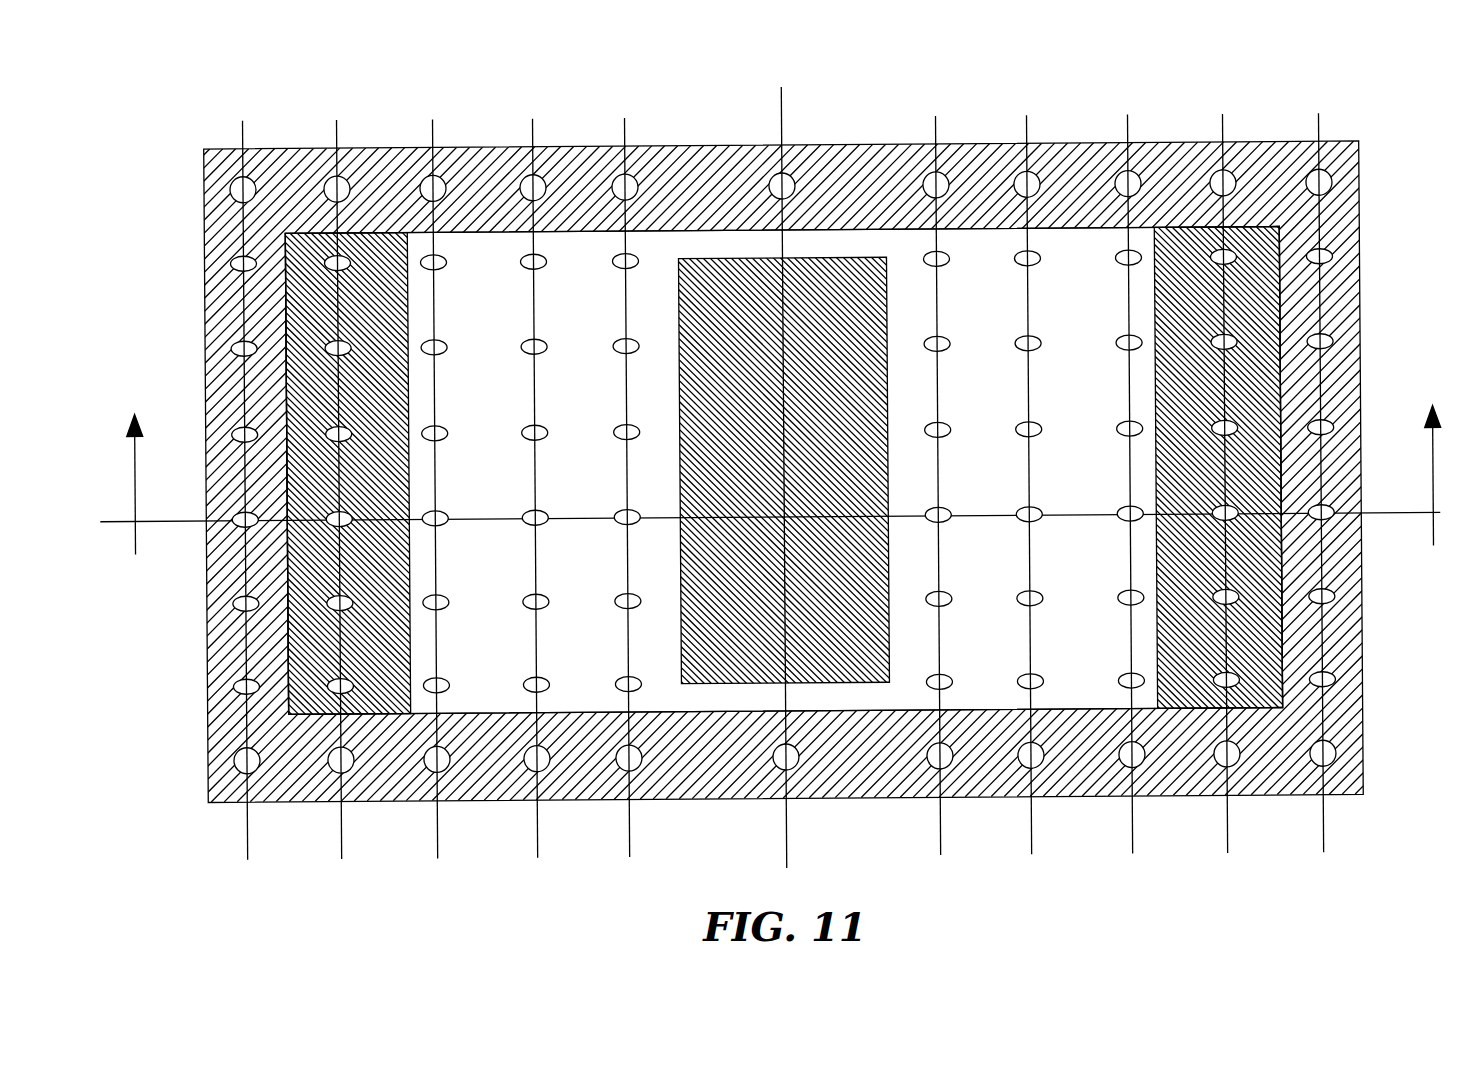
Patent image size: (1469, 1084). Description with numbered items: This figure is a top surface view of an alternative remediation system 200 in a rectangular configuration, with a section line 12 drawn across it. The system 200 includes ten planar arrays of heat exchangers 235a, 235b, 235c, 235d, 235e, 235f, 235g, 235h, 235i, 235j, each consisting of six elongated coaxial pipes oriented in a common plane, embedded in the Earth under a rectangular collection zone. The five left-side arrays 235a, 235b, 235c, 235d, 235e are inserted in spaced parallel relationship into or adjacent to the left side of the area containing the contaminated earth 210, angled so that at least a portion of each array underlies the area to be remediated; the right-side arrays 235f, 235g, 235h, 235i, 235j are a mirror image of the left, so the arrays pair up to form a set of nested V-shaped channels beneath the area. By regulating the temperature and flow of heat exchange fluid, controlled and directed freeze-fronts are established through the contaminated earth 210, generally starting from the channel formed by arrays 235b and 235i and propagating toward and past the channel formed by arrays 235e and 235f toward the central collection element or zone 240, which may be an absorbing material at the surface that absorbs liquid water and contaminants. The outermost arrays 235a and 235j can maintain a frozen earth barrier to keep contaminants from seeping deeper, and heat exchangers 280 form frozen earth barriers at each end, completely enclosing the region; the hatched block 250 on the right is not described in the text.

The system 200 is at (470, 82).
The area containing the contaminated earth 210 is at (756, 246).
The collection element or zone 240 is at (799, 263).
The right side block 250 is at (1252, 265).
The heat exchangers 280 is at (280, 212).
The planar array of heat exchangers 235a is at (256, 508).
The planar array of heat exchangers 235b is at (346, 507).
The planar array of heat exchangers 235c is at (437, 506).
The planar array of heat exchangers 235d is at (543, 505).
The planar array of heat exchangers 235e is at (632, 505).
The planar array of heat exchangers 235f is at (950, 503).
The planar array of heat exchangers 235g is at (1040, 502).
The planar array of heat exchangers 235h is at (1130, 501).
The planar array of heat exchangers 235i is at (1234, 501).
The planar array of heat exchangers 235j is at (1325, 500).
The section line 12- 12 is at (784, 454).